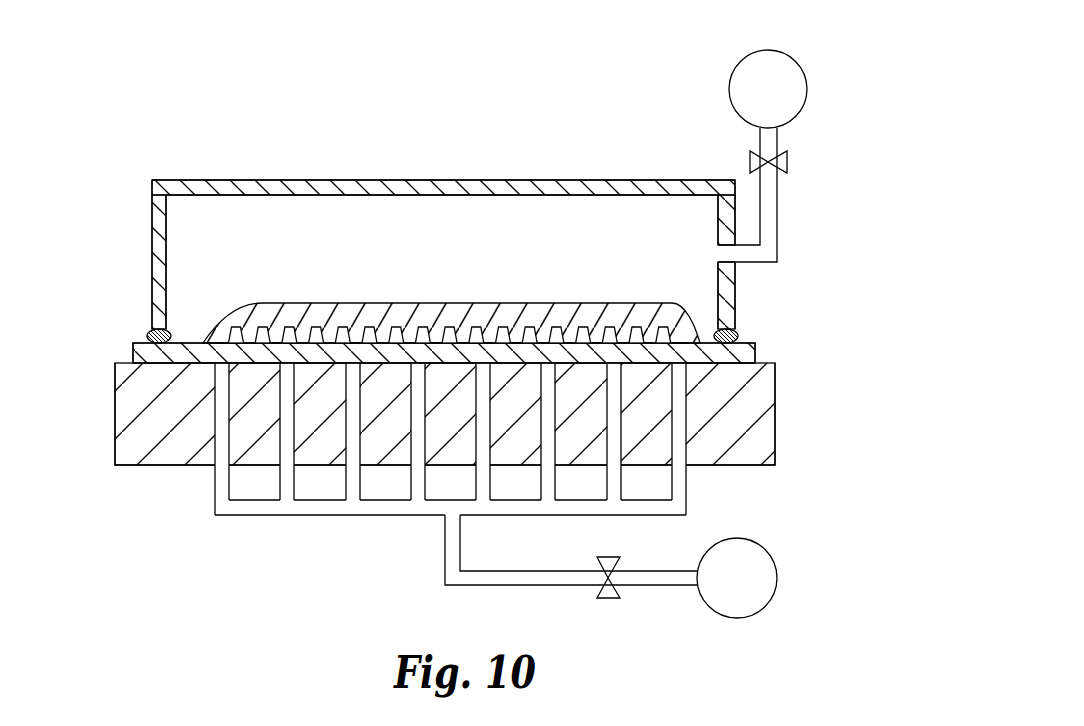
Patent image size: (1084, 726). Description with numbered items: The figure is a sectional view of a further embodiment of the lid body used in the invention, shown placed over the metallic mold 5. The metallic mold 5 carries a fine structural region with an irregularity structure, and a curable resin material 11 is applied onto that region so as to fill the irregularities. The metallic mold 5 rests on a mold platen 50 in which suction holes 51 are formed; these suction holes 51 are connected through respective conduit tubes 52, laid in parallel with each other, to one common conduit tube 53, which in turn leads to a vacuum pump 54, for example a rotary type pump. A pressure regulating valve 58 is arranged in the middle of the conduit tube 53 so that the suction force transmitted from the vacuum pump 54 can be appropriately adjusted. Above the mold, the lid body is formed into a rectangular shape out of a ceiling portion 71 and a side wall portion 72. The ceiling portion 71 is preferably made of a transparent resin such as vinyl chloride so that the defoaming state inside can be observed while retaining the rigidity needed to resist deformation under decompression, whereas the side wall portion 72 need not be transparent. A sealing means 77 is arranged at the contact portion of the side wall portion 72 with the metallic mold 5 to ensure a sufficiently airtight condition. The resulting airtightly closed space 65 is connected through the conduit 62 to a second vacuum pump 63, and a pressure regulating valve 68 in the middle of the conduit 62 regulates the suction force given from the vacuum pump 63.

The metallic mold 5 is at (482, 304).
The curable resin material 11 is at (615, 308).
The mold platen 50 is at (763, 417).
The suction holes 51 is at (288, 428).
The conduit tubes 52 is at (278, 488).
The conduit tube 53 is at (452, 552).
The vacuum pump 54 is at (706, 606).
The pressure regulating valve 58 is at (602, 598).
The conduit tube 62 is at (768, 217).
The vacuum pump 63 is at (800, 70).
The airtightly closed space 65 is at (423, 252).
The pressure regulating valve 68 is at (790, 162).
The ceiling portion 71 is at (617, 182).
The side wall portion 72 is at (152, 242).
The sealing means 77 is at (150, 328).